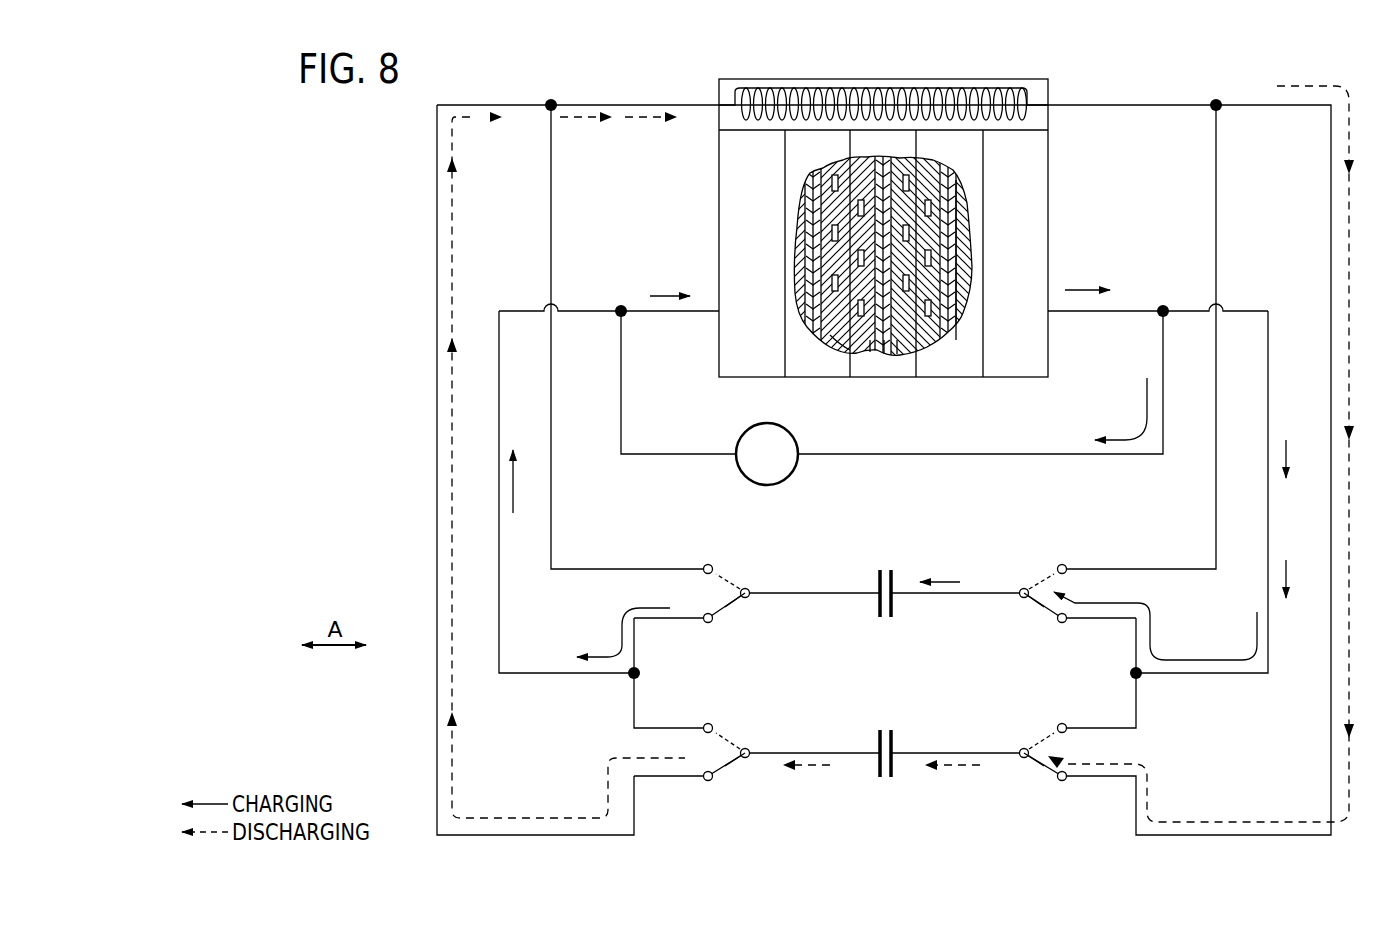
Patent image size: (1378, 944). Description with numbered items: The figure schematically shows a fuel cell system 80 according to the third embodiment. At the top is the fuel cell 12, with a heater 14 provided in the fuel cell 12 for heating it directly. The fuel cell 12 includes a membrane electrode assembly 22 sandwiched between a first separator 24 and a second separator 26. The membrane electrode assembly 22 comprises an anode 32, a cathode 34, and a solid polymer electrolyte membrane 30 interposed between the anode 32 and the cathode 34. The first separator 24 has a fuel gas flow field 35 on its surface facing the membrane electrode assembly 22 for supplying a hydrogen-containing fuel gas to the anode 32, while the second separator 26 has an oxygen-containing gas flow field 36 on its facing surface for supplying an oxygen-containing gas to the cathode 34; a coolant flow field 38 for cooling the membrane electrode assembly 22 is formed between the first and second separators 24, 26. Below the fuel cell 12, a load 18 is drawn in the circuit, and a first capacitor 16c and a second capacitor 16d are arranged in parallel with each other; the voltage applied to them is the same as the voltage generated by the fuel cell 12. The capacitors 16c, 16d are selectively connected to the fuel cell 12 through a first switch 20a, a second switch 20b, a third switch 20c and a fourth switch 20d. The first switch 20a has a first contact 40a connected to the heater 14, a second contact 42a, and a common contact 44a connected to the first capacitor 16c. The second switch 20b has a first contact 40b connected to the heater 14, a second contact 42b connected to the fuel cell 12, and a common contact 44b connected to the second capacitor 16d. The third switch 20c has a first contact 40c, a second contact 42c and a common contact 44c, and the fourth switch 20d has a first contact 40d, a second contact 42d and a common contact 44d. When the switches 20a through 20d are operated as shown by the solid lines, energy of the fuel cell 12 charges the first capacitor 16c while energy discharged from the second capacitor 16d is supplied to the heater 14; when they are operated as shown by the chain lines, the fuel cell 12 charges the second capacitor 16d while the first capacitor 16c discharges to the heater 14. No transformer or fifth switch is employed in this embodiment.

The fuel cell system 80 is at (378, 140).
The fuel cell 12 is at (1052, 203).
The heater 14 is at (786, 87).
The membrane electrode assembly 22 is at (885, 300).
The first separator 24 is at (811, 284).
The coolant flow field 38 is at (847, 216).
The fuel gas flow field 35 is at (947, 216).
The oxygen-containing gas flow field 36 is at (963, 241).
The second separator 26 is at (840, 350).
The anode 32 is at (878, 348).
The solid polymer electrolyte membrane 30 is at (885, 348).
The cathode 34 is at (913, 375).
The load 18 is at (757, 486).
The first capacitor 16c is at (885, 622).
The second capacitor 16d is at (885, 782).
The first switch 20a is at (735, 595).
The second switch 20b is at (736, 752).
The third switch 20c is at (1036, 752).
The fourth switch 20d is at (1032, 593).
The first contact 40a is at (707, 563).
The first contact 40b is at (707, 722).
The first contact 40c is at (1062, 722).
The first contact 40d is at (1062, 563).
The second contact 42a is at (709, 624).
The second contact 42b is at (709, 782).
The second contact 42c is at (1064, 782).
The second contact 42d is at (1061, 624).
The common contact 44a is at (746, 599).
The common contact 44b is at (746, 759).
The common contact 44c is at (1024, 759).
The common contact 44d is at (1024, 599).